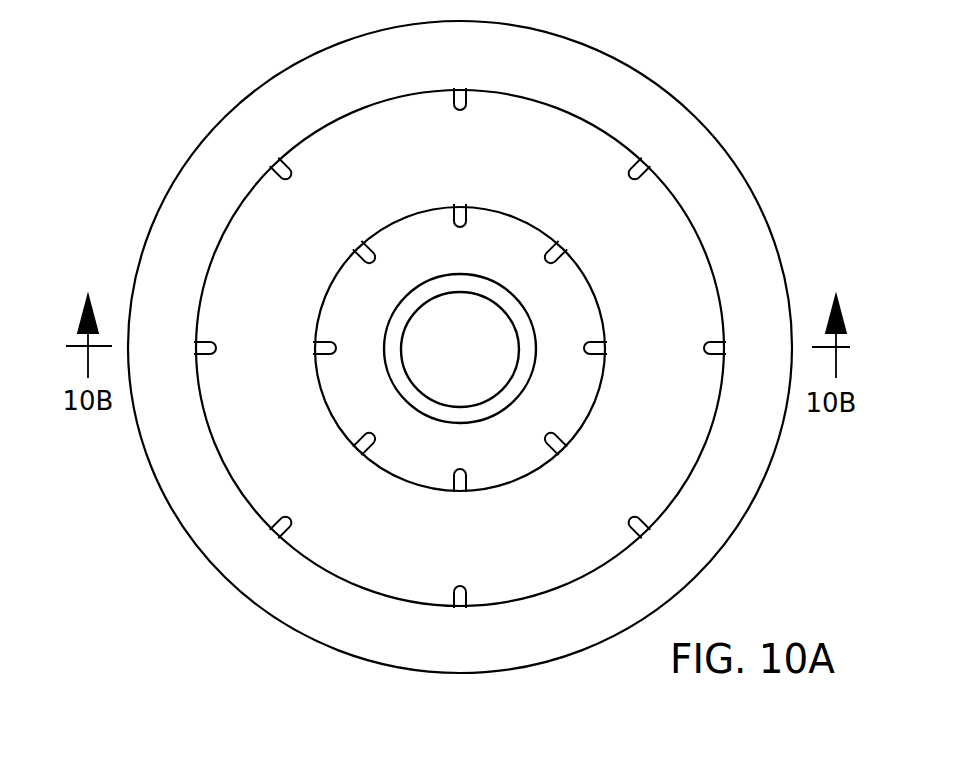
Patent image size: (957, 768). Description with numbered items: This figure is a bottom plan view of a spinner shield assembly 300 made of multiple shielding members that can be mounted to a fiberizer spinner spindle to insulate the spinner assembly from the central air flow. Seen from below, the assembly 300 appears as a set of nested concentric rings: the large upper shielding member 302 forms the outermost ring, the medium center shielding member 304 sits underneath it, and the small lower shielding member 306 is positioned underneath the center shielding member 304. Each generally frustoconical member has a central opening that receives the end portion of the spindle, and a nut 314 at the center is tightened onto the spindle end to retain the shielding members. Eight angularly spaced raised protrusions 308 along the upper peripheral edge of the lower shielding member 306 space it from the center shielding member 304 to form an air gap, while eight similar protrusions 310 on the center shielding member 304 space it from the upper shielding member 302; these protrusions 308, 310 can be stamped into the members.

The spinner shield assembly 300 is at (482, 347).
The upper shielding member 302 is at (715, 168).
The center shielding member 304 is at (683, 247).
The lower shielding member 306 is at (563, 397).
The protrusions 308 is at (460, 213).
The protrusions 310 is at (460, 93).
The nut 314 is at (460, 324).